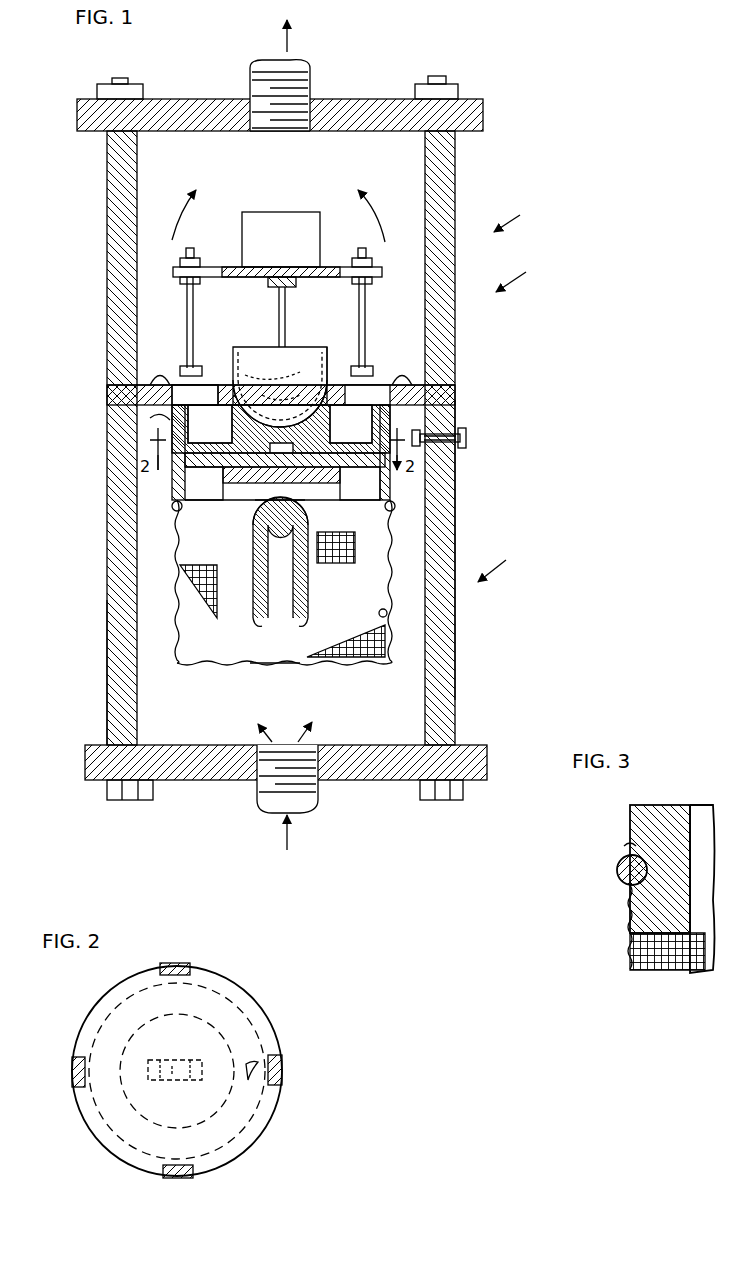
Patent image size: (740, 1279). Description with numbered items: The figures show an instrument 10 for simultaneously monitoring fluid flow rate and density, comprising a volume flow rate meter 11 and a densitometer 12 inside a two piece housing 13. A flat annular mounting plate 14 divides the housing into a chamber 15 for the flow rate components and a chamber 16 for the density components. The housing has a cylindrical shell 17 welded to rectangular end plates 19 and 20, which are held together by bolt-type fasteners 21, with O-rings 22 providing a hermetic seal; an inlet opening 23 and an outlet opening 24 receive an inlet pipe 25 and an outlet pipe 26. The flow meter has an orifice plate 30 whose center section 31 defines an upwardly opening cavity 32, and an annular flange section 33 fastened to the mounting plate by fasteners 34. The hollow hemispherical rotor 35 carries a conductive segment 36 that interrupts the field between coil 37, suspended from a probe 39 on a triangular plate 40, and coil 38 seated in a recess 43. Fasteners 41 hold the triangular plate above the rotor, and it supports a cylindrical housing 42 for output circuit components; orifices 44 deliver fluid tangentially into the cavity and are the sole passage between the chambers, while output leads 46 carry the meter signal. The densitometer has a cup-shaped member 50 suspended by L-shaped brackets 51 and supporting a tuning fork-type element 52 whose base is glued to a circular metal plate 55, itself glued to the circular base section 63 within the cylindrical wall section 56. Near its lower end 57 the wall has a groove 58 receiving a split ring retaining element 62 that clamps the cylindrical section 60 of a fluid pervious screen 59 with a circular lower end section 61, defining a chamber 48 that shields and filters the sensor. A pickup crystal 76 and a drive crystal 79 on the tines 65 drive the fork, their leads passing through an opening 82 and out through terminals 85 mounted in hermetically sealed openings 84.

In FIG. 1, the instrument 10 is at (518, 272).
In FIG. 1, the volume flow rate meter 11 is at (515, 212).
In FIG. 1, the densitometer 12 is at (497, 559).
In FIG. 1, the housing 13 is at (456, 530).
In FIG. 1, the mounting plate 14 is at (456, 394).
In FIG. 1, the chamber 15 is at (428, 184).
In FIG. 1, the chamber 16 is at (150, 660).
In FIG. 1, the cylindrical shell 17 is at (107, 180).
In FIG. 1, the end plate 19 is at (396, 781).
In FIG. 1, the end plate 20 is at (332, 99).
In FIG. 1, the bolt-type fasteners 21 is at (452, 92).
In FIG. 1, the O-rings 22 is at (110, 405).
In FIG. 1, the inlet opening 23 is at (300, 745).
In FIG. 1, the outlet opening 24 is at (290, 132).
In FIG. 1, the inlet pipe 25 is at (257, 797).
In FIG. 1, the outlet pipe 26 is at (308, 64).
In FIG. 1, the orifice plate 30 is at (210, 372).
In FIG. 1, the center section 31 is at (304, 432).
In FIG. 1, the cavity 32 is at (281, 416).
In FIG. 1, the annular flange section 33 is at (178, 382).
In FIG. 1, the fasteners 34 is at (156, 376).
In FIG. 1, the rotor 35 is at (333, 352).
In FIG. 1, the electrically conductive segment 36 is at (272, 384).
In FIG. 1, the coil 37 is at (280, 384).
In FIG. 1, the coil 38 is at (332, 382).
In FIG. 1, the probe 39 is at (284, 322).
In FIG. 1, the triangular plate 40 is at (173, 270).
In FIG. 1, the fasteners 41 is at (196, 306).
In FIG. 1, the cylindrical housing 42 is at (307, 212).
In FIG. 1, the recess 43 is at (351, 424).
In FIG. 1, the orifices 44 is at (210, 424).
In FIG. 1, the output leads 46 is at (90, 442).
In FIG. 1, the chamber 48 is at (392, 606).
In FIG. 1, the cup-shaped member 50 is at (392, 474).
In FIG. 2, the cup-shaped member 50 is at (254, 1002).
In FIG. 3, the cup-shaped member 50 is at (630, 822).
In FIG. 1, the L-shaped brackets 51 is at (172, 458).
In FIG. 2, the L-shaped brackets 51 is at (162, 976).
In FIG. 1, the tuning fork-type element 52 is at (308, 578).
In FIG. 2, the tuning fork-type element 52 is at (160, 1060).
In FIG. 1, the circular metal plate 55 is at (254, 512).
In FIG. 2, the circular metal plate 55 is at (180, 1130).
In FIG. 1, the cylindrical wall section 56 is at (347, 540).
In FIG. 2, the cylindrical wall section 56 is at (240, 1008).
In FIG. 3, the cylindrical wall section 56 is at (624, 846).
In FIG. 1, the lower end 57 is at (392, 516).
In FIG. 3, the groove 58 is at (628, 900).
In FIG. 1, the fluid pervious screen 59 is at (352, 668).
In FIG. 3, the fluid pervious screen 59 is at (628, 942).
In FIG. 1, the cylindrical section 60 is at (177, 610).
In FIG. 3, the cylindrical section 60 is at (630, 966).
In FIG. 1, the circular lower end section 61 is at (262, 668).
In FIG. 1, the split ring retaining element 62 is at (177, 512).
In FIG. 3, the split ring retaining element 62 is at (616, 872).
In FIG. 1, the circular base section 63 is at (269, 481).
In FIG. 1, the tines 65 is at (280, 630).
In FIG. 1, the pickup crystal 76 is at (309, 520).
In FIG. 1, the drive crystal 79 is at (255, 526).
In FIG. 1, the opening 82 is at (360, 483).
In FIG. 1, the hermetically sealed openings 84 is at (460, 432).
In FIG. 1, the terminals 85 is at (470, 442).